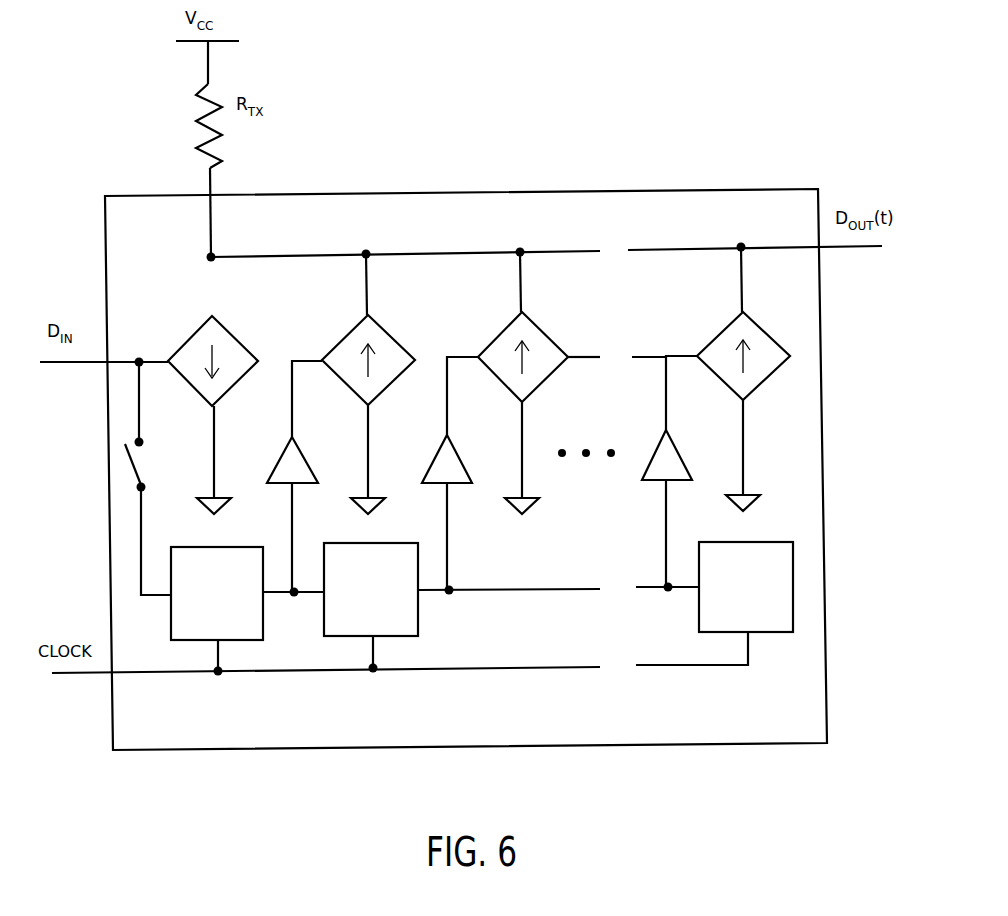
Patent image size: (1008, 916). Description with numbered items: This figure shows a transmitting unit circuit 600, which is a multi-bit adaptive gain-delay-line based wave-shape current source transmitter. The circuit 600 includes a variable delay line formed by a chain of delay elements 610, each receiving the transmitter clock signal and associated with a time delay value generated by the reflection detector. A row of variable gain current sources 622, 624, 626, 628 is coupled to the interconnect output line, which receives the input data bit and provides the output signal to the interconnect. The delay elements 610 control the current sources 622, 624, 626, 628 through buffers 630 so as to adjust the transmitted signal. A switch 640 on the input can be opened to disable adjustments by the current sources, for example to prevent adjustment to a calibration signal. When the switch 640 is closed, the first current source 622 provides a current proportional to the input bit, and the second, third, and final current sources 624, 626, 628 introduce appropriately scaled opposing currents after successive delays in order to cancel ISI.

The transmitting unit circuit 600 is at (678, 189).
The delay element 610 is at (420, 604).
The first current source 622 is at (236, 332).
The second current source 624 is at (392, 332).
The third current source 626 is at (549, 333).
The final current source 628 is at (752, 322).
The buffer 630 is at (306, 461).
The switch 640 is at (146, 441).